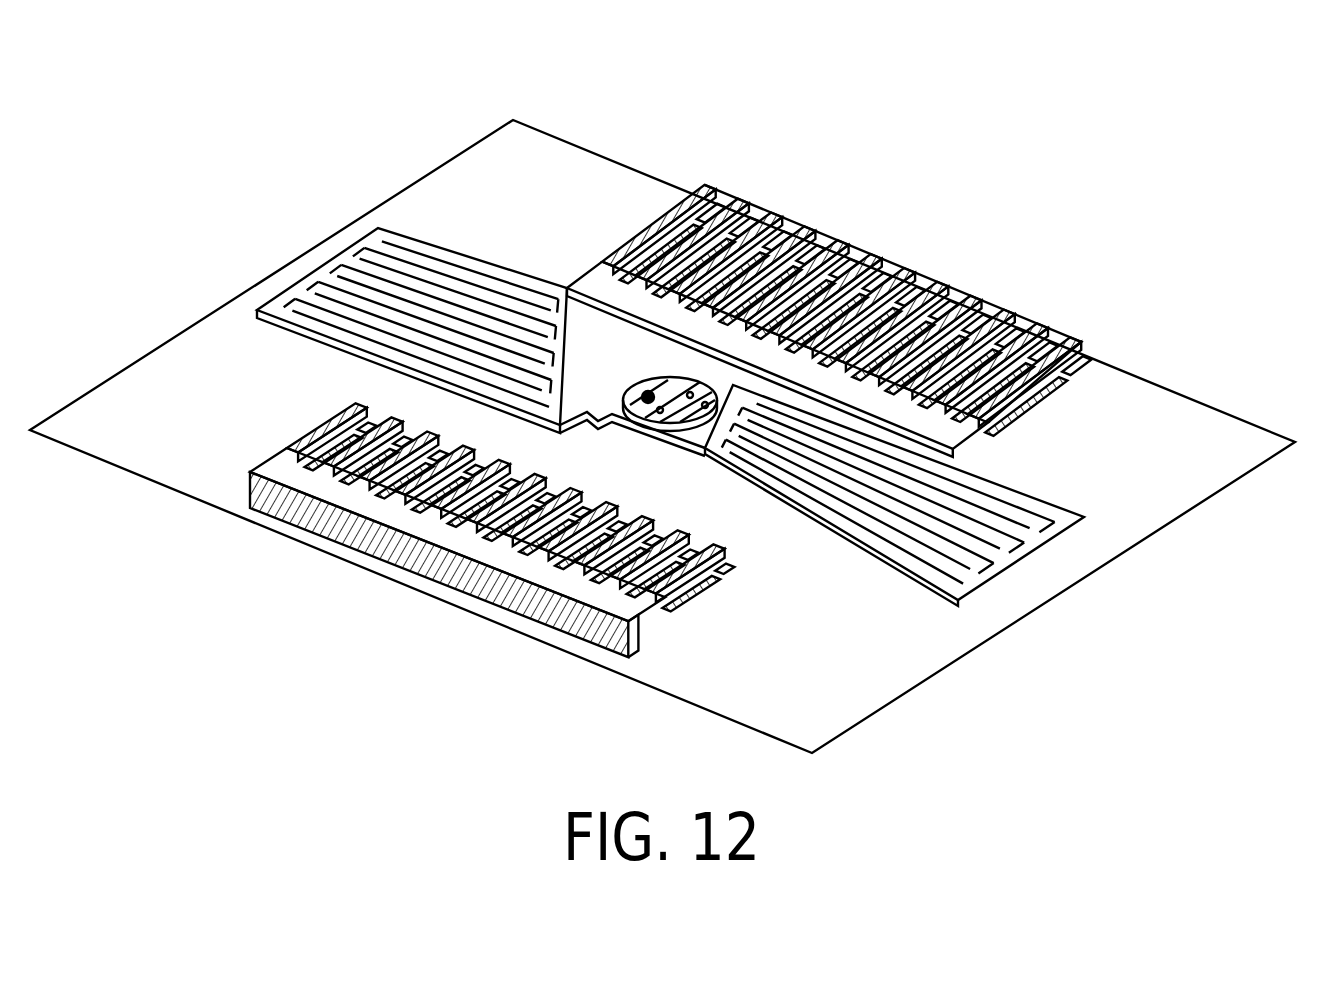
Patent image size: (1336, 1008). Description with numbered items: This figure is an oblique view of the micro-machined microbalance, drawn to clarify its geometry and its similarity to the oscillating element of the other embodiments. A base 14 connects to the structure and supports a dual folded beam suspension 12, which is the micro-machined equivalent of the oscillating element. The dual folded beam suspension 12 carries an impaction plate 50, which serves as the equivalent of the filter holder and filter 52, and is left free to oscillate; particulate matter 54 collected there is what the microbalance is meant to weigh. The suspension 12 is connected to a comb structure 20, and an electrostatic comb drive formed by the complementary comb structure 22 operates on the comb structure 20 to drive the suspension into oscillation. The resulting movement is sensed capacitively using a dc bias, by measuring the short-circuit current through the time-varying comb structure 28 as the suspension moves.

The dual folded beam suspension 12 is at (323, 260).
The base 14 is at (763, 422).
The comb structure 20 is at (1115, 560).
The complementary comb structure 22 is at (1023, 398).
The complementary comb structure 28 is at (682, 610).
The impaction plate 50 is at (697, 388).
The filter 52 is at (884, 285).
The particulate matter 54 is at (648, 397).